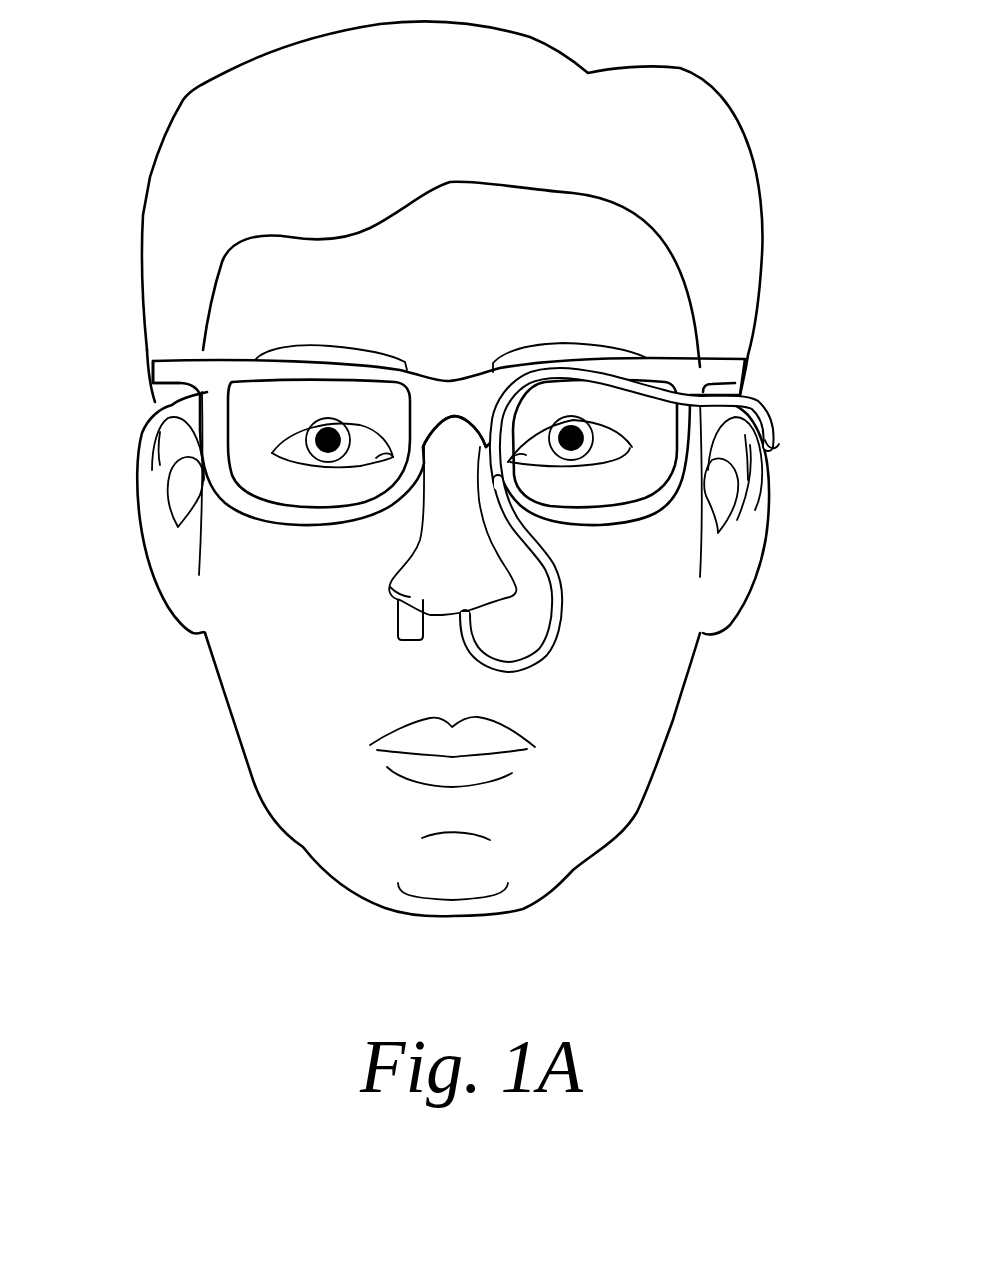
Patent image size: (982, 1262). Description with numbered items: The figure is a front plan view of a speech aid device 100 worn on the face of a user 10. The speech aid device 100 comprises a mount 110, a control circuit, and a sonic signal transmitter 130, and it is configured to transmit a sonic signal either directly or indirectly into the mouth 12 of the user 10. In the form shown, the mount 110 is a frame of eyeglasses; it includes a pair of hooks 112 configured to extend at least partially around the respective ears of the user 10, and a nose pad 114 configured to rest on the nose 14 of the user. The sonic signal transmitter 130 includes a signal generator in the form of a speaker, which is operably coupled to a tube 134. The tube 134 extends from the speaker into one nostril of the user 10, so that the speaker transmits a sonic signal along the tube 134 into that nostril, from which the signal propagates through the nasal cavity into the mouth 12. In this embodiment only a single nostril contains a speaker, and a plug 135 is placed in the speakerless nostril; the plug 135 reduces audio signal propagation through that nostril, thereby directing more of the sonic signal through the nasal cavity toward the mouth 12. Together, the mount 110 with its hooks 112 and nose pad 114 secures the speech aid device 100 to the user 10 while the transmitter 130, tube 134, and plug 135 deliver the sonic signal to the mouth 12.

The user 10 is at (282, 792).
The mouth 12 is at (400, 732).
The nose 14 is at (440, 535).
The speech aid device 100 is at (460, 361).
The mount 110 is at (420, 380).
The hooks 112 is at (212, 369).
The nose pad 114 is at (460, 415).
The sonic signal transmitter 130 is at (762, 411).
The tube 134 is at (527, 560).
The plug 135 is at (397, 625).